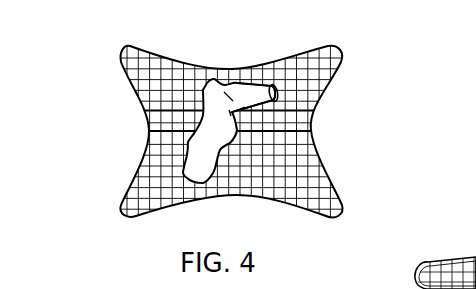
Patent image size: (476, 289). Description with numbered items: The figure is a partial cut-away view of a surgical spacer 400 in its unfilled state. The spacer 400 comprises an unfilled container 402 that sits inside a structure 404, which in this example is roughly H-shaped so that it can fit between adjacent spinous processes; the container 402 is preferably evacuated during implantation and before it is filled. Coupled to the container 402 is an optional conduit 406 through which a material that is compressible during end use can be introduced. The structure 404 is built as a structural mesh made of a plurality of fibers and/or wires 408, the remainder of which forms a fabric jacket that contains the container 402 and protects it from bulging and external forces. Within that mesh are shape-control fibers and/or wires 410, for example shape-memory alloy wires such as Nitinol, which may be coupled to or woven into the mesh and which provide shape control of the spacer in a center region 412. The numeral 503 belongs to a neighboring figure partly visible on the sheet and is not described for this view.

The spacer 400 is at (243, 118).
The container 402 is at (216, 84).
The structure 404 is at (330, 183).
The conduit 406 is at (258, 96).
The fibers and/or wires 408 is at (300, 141).
The shape-control fibers and/or wires 410 is at (153, 128).
The center region 412 is at (182, 129).
The implant 503 is at (445, 256).